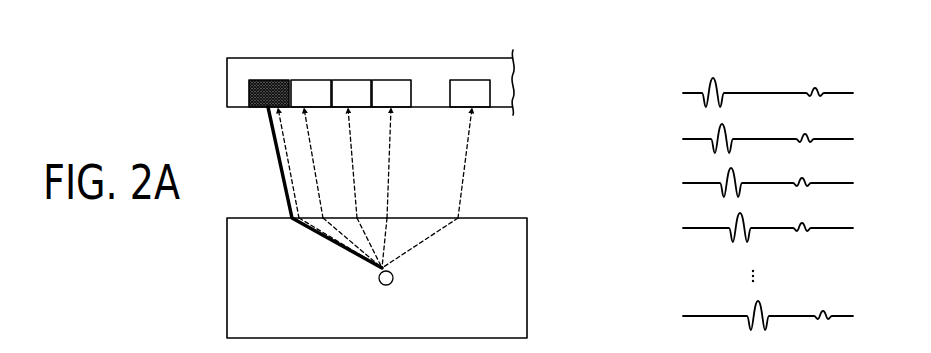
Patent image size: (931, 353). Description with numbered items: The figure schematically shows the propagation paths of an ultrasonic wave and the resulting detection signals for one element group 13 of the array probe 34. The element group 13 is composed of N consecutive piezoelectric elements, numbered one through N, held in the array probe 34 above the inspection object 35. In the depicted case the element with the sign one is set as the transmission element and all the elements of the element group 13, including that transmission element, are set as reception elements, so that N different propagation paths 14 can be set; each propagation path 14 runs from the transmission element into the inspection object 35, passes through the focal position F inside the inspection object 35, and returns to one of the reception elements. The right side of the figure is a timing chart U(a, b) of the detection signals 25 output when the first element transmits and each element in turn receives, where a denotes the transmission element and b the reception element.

The array probe 34 is at (229, 58).
The element group 13 is at (485, 35).
The propagation path 14 is at (268, 164).
The inspection object 35 is at (227, 278).
The focal position F is at (379, 276).
The detection signal 25 is at (768, 92).